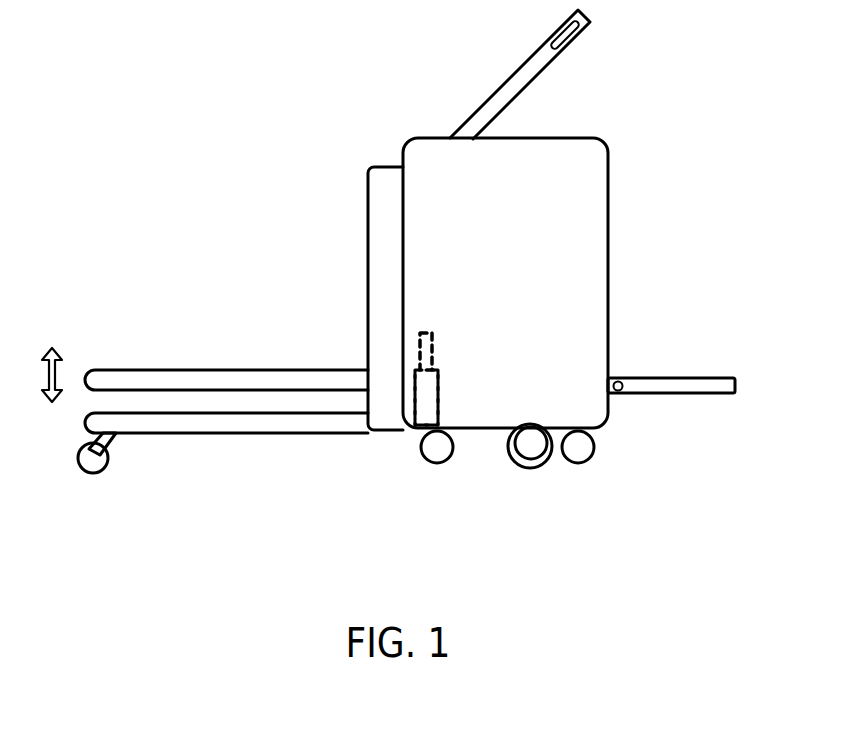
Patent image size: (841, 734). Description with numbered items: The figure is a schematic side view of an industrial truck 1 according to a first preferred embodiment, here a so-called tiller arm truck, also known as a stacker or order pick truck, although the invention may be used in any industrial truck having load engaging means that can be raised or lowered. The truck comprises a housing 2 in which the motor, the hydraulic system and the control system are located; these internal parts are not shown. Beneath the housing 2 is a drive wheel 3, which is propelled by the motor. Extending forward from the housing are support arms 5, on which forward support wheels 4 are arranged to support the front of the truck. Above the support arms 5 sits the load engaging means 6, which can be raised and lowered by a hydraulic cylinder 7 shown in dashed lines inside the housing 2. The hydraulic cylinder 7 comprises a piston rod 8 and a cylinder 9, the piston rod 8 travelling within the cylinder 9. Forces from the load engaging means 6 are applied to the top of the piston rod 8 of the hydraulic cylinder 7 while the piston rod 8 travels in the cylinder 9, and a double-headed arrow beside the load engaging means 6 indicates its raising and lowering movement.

The industrial truck 1 is at (222, 256).
The housing 2 is at (444, 215).
The drive wheel 3 is at (537, 463).
The forward support wheels 4 is at (107, 455).
The support arms 5 is at (170, 413).
The load engaging means 6 is at (170, 370).
The hydraulic cylinder 7 is at (460, 375).
The piston rod 8 is at (442, 347).
The cylinder 9 is at (440, 397).